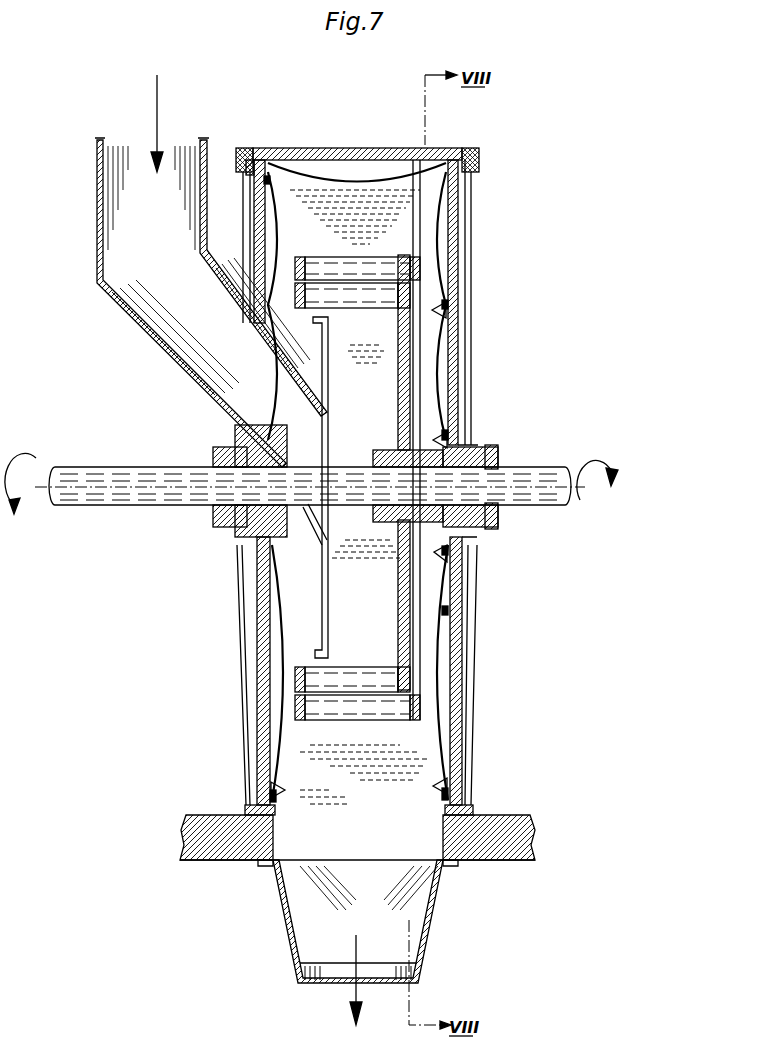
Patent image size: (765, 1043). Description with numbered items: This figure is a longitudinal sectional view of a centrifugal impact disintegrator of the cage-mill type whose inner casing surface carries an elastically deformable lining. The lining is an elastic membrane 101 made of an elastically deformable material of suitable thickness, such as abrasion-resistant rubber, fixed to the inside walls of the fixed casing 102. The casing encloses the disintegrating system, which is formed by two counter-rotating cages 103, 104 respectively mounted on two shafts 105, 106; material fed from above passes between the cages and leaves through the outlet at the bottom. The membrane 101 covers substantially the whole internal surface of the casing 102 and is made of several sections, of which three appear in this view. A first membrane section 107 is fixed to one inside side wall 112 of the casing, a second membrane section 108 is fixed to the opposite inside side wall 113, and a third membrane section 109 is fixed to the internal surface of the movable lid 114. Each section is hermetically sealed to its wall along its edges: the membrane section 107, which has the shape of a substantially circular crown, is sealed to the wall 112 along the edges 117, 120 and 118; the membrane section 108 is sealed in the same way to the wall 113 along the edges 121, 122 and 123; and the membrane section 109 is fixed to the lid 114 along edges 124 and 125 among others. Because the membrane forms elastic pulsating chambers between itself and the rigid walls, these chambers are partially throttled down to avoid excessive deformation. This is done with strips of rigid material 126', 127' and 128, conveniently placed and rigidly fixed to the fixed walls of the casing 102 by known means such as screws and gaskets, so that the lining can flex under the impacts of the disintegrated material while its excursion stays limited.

The elastic membrane 101 is at (352, 178).
The fixed casing 102 is at (465, 775).
The counter-rotating cage 103 is at (410, 345).
The counter-rotating cage 104 is at (403, 402).
The shaft 105 is at (552, 467).
The shaft 106 is at (132, 467).
The membrane section 107 is at (440, 258).
The membrane section 108 is at (272, 251).
The membrane section 109 is at (317, 175).
The inside side wall 112 is at (458, 282).
The inside side wall 113 is at (265, 271).
The movable lid 114 is at (288, 155).
The edge 117 is at (452, 178).
The edge 118 is at (433, 440).
The edge 120 is at (433, 786).
The edge 121 is at (264, 181).
The edge 122 is at (268, 788).
The edge 123 is at (275, 335).
The edge 124 is at (270, 160).
The edge 125 is at (447, 168).
The strip of rigid material 126' is at (485, 315).
The strip of rigid material 127' is at (497, 614).
The strip of rigid material 128 is at (278, 685).